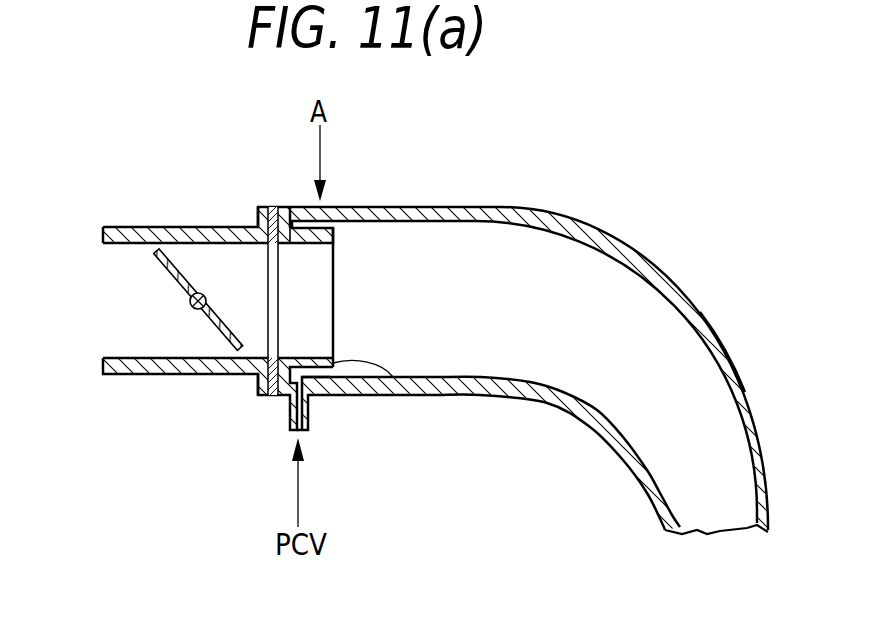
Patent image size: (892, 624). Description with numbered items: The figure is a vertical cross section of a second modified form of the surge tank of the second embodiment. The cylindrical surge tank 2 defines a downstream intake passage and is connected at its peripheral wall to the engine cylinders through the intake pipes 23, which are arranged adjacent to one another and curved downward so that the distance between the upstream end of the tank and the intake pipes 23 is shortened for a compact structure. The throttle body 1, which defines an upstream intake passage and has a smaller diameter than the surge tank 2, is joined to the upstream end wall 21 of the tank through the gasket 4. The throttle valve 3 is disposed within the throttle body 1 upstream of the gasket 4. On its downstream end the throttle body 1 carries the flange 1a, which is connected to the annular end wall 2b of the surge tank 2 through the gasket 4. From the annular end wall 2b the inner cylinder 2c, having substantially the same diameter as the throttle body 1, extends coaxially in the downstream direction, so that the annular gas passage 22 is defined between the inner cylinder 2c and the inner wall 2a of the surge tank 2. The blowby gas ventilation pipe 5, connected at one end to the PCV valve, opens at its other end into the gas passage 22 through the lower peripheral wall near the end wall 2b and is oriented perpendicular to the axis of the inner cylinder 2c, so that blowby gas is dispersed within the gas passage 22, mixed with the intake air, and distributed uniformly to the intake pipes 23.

The throttle body 1 is at (163, 375).
The flange 1a is at (258, 216).
The surge tank 2 is at (502, 206).
The inner wall 2a is at (503, 375).
The annular end wall 2b is at (292, 210).
The inner cylinder 2c is at (402, 378).
The throttle valve 3 is at (170, 275).
The gasket 4 is at (275, 395).
The blowby gas ventilation pipe 5 is at (308, 415).
The upstream end wall 21 is at (244, 390).
The annular gas passage 22 is at (350, 396).
The intake pipes 23 is at (714, 332).